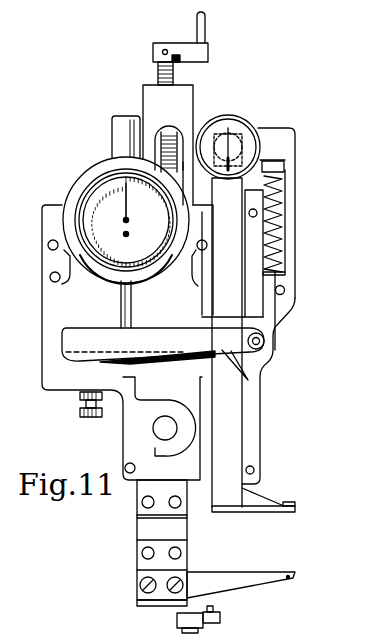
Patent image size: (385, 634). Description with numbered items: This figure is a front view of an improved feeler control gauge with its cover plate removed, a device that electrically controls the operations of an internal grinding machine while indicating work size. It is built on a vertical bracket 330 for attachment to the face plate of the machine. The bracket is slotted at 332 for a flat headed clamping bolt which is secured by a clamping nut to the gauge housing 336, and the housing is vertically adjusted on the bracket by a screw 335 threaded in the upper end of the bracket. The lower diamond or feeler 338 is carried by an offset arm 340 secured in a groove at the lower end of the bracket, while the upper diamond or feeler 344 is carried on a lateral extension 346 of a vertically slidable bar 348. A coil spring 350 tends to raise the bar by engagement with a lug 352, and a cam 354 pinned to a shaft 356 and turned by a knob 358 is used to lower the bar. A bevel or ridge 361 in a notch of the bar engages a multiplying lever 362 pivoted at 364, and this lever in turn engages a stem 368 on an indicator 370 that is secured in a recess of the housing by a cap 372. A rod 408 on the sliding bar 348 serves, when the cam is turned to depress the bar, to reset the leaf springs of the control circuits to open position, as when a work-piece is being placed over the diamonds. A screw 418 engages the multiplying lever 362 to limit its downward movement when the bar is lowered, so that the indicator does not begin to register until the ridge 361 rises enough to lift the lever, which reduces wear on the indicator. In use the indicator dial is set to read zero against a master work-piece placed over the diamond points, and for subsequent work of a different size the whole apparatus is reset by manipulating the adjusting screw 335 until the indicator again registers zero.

The vertical bracket 330 is at (168, 527).
The slot 332 is at (190, 132).
The screw 335 is at (175, 70).
The gauge housing 336 is at (125, 435).
The lower diamond 338 is at (286, 579).
The offset arm 340 is at (197, 583).
The upper diamond 344 is at (287, 505).
The lateral extension 346 is at (238, 500).
The vertically slidable bar 348 is at (233, 435).
The coil spring 350 is at (286, 238).
The lug 352 is at (276, 169).
The cam 354 is at (258, 124).
The shaft 356 is at (236, 134).
The knob 358 is at (268, 149).
The bevel or ridge 361 is at (250, 381).
The multiplying lever 362 is at (163, 344).
The pivot 364 is at (265, 339).
The stem 368 is at (120, 304).
The indicator 370 is at (152, 263).
The cap 372 is at (87, 168).
The rod 408 is at (148, 362).
The screw 418 is at (84, 402).